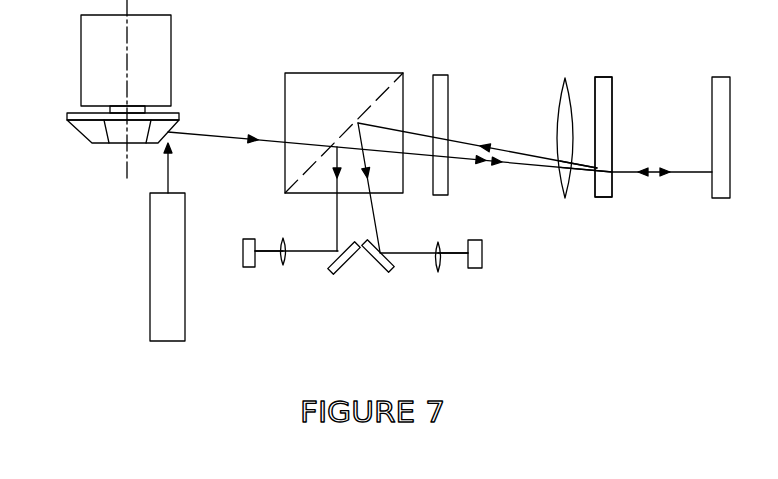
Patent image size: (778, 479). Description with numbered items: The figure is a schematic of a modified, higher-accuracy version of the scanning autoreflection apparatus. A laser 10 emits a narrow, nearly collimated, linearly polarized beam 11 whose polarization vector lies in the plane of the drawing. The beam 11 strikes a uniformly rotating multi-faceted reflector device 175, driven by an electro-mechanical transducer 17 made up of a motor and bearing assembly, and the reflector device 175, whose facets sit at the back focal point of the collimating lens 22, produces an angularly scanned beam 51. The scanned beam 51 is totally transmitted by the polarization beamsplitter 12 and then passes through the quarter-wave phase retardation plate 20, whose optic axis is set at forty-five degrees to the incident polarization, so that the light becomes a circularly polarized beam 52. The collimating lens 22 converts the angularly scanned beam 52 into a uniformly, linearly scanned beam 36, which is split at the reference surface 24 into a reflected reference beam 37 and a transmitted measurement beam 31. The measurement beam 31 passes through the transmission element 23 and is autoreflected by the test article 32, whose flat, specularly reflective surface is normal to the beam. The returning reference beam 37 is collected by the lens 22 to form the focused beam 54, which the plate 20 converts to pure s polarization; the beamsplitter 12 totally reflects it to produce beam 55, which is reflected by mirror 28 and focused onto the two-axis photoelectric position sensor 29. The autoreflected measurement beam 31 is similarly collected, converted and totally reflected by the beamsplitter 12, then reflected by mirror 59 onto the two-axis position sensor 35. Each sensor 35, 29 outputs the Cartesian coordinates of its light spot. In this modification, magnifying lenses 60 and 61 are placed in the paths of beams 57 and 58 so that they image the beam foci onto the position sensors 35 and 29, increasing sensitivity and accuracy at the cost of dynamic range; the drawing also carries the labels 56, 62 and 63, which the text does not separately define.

The laser 10 is at (148, 270).
The linearly polarized beam 11 is at (165, 172).
The polarization beamsplitter 12 is at (296, 57).
The electro-mechanical transducer 17 is at (171, 55).
The multi-faceted reflector device 175 is at (88, 138).
The quarter-wave phase retardation plate 20 is at (433, 75).
The collimating lens 22 is at (563, 81).
The transmission element 23 is at (600, 77).
The reference surface 24 is at (612, 88).
The mirror 28 is at (370, 274).
The two-axis photoelectric position sensor 29 is at (469, 274).
The measurement beam 31 is at (648, 168).
The test article 32 is at (712, 102).
The two-axis photoelectric position sensor 35 is at (238, 276).
The linearly scanned beam 36 is at (578, 173).
The reference beam 37 is at (585, 163).
The angularly scanned beam 51 is at (213, 120).
The circularly polarized beam 52 is at (493, 163).
The focused beam 54 is at (483, 143).
The beam 55 is at (375, 217).
The reflected beam 56 is at (337, 217).
The beam 57 is at (301, 237).
The beam 58 is at (400, 237).
The mirror 59 is at (324, 274).
The magnifying lens 60 is at (283, 265).
The magnifying lens 61 is at (443, 275).
The focal point 62 is at (268, 249).
The focal point 63 is at (442, 243).